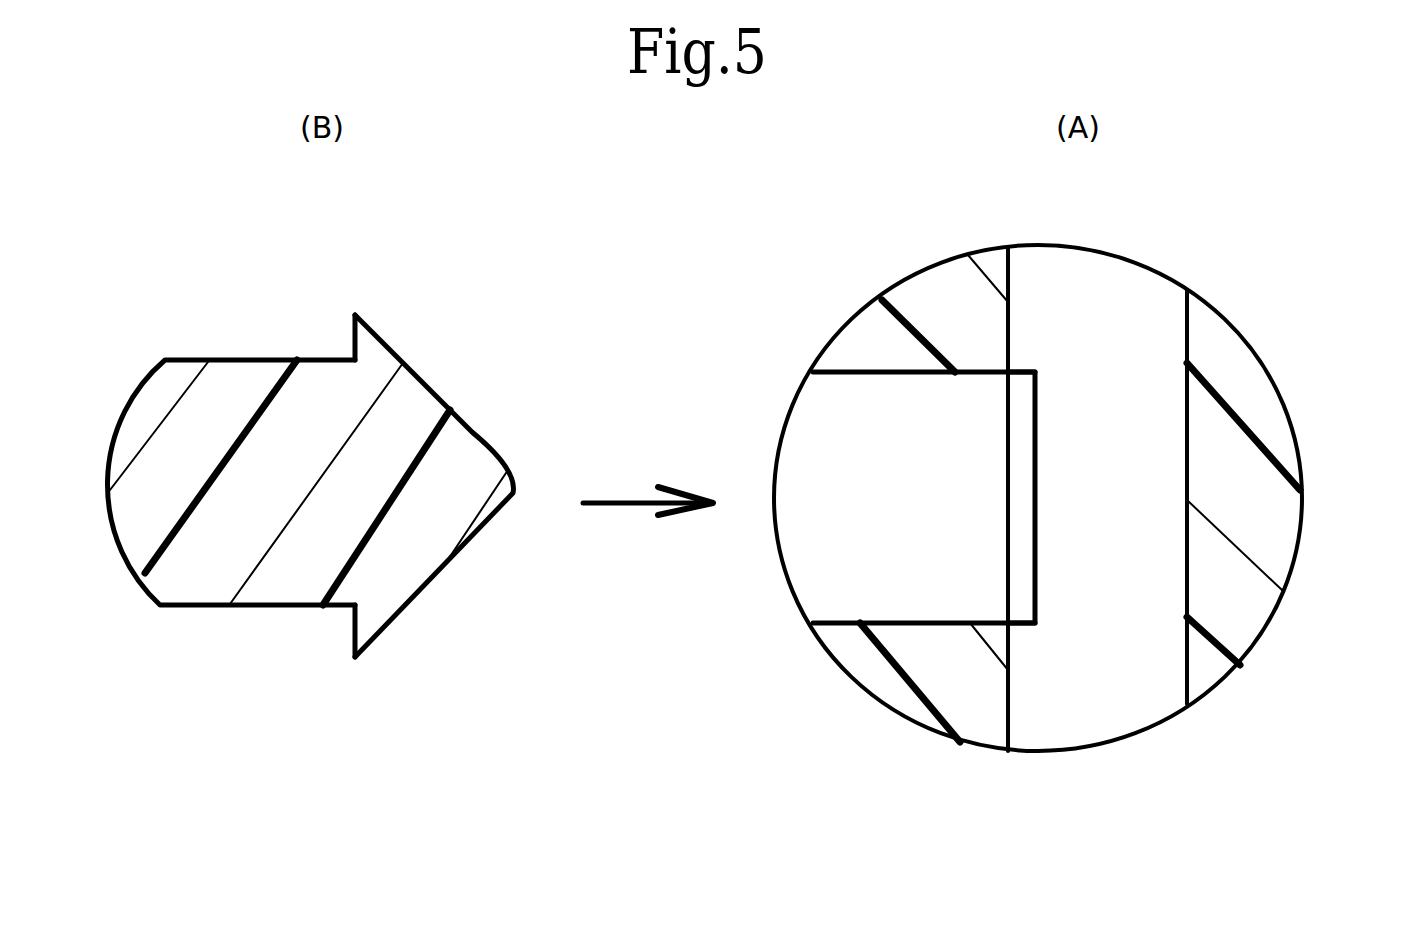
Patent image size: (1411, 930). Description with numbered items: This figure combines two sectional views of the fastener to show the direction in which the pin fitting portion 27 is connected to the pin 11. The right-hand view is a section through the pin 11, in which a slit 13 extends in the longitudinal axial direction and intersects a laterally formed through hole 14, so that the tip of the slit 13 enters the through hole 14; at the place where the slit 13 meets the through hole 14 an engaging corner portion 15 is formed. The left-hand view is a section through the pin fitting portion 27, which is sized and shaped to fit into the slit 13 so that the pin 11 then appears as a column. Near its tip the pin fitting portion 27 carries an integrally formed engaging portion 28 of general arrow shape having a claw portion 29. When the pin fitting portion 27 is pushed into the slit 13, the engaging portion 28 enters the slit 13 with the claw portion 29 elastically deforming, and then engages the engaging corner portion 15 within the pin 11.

The pin 11 is at (1275, 530).
The slit 13 is at (810, 433).
The through hole 14 is at (1077, 737).
The engaging corner portion 15 is at (1003, 360).
The pin fitting portion 27 is at (218, 388).
The engaging portion 28 is at (457, 457).
The claw portion 29 is at (367, 347).